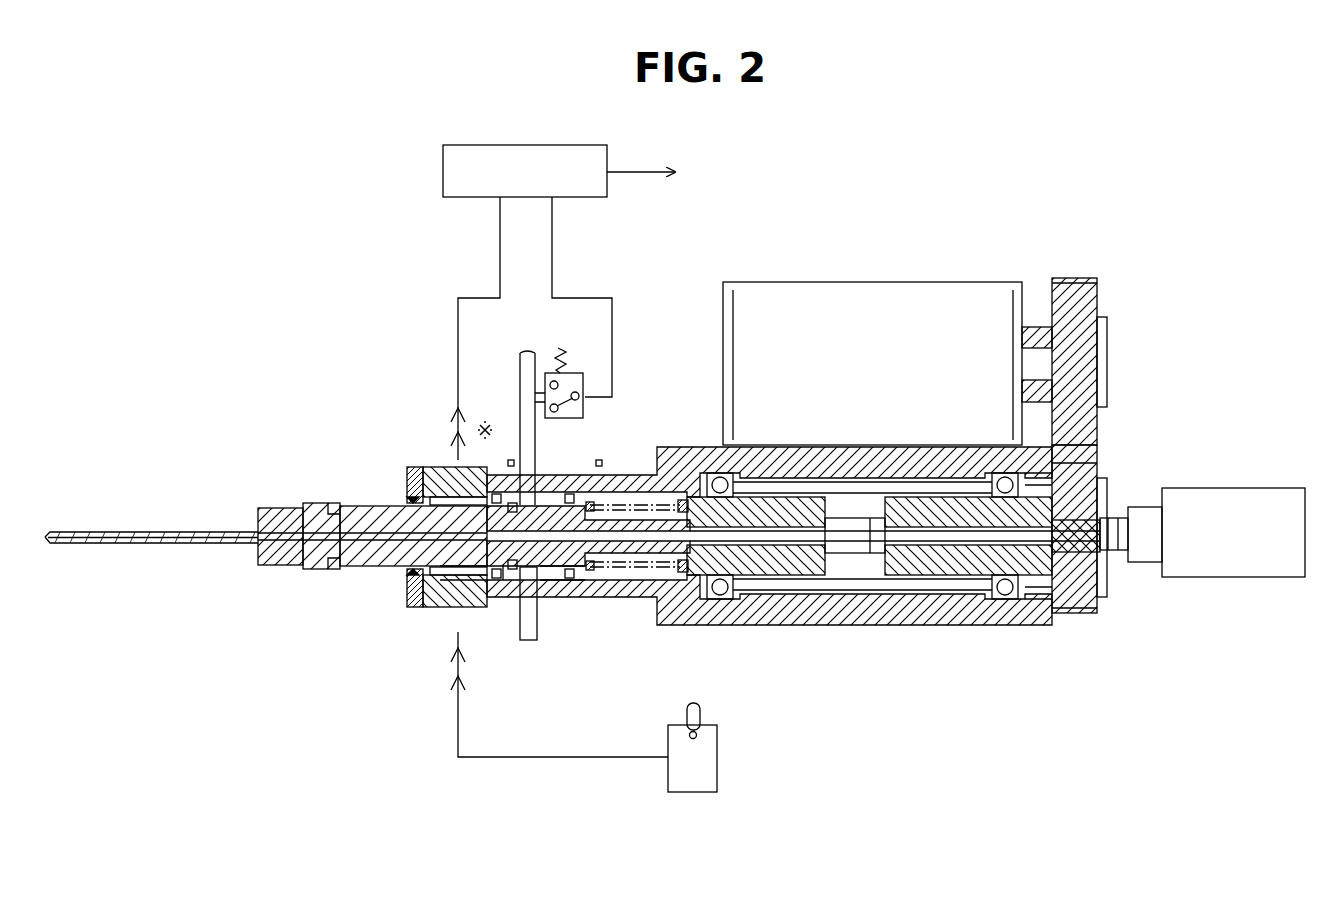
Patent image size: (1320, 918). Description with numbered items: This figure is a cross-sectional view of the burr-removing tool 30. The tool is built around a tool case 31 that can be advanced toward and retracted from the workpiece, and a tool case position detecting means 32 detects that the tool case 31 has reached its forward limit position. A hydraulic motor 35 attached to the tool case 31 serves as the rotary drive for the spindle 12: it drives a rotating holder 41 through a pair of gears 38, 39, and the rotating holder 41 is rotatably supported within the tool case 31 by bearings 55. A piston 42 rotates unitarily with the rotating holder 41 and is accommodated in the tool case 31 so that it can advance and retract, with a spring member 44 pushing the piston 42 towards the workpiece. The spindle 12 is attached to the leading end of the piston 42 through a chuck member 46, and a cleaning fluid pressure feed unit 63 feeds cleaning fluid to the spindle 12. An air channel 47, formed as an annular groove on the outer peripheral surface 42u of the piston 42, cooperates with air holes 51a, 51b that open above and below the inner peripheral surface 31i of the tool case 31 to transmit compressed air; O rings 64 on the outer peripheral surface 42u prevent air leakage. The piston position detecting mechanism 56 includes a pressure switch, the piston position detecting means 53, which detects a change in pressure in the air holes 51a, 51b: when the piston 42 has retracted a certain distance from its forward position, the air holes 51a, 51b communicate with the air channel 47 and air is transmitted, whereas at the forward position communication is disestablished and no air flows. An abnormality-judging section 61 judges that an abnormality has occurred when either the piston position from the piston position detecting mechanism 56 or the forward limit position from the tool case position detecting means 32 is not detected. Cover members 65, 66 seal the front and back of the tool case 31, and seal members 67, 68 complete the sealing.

The spindle 12 is at (108, 548).
The burr-removing tool 30 is at (424, 416).
The tool case 31 is at (448, 476).
The inner peripheral surface of the tool case 31i is at (558, 586).
The tool case position detecting means 32 is at (693, 795).
The hydraulic motor 35 is at (872, 312).
The gear 38 is at (1097, 298).
The gear 39 is at (1085, 466).
The rotating holder 41 is at (940, 560).
The piston 42 is at (378, 552).
The outer peripheral surface of the piston 42u is at (458, 578).
The spring member 44 is at (620, 600).
The chuck member 46 is at (315, 565).
The air channel 47 is at (510, 618).
The air hole 51a is at (538, 472).
The air hole 51b is at (530, 620).
The piston position detecting means 53 is at (598, 408).
The bearing 55 is at (722, 600).
The piston position detecting mechanism 56 is at (632, 322).
The abnormality-judging section 61 is at (443, 170).
The cleaning fluid pressure feed unit 63 is at (1220, 578).
The O ring 64 is at (512, 460).
The cover member 65 is at (407, 474).
The cover member 66 is at (1042, 446).
The seal member 67 is at (407, 498).
The seal member 68 is at (1110, 494).